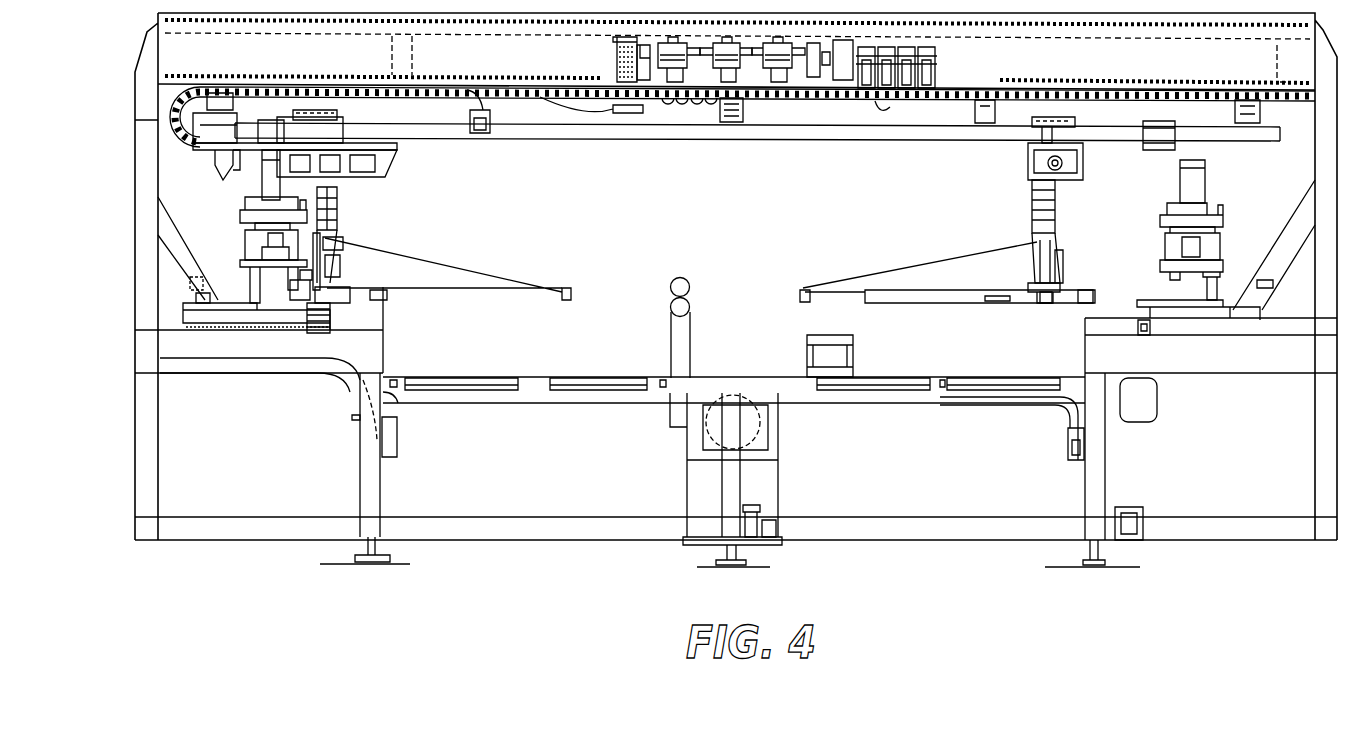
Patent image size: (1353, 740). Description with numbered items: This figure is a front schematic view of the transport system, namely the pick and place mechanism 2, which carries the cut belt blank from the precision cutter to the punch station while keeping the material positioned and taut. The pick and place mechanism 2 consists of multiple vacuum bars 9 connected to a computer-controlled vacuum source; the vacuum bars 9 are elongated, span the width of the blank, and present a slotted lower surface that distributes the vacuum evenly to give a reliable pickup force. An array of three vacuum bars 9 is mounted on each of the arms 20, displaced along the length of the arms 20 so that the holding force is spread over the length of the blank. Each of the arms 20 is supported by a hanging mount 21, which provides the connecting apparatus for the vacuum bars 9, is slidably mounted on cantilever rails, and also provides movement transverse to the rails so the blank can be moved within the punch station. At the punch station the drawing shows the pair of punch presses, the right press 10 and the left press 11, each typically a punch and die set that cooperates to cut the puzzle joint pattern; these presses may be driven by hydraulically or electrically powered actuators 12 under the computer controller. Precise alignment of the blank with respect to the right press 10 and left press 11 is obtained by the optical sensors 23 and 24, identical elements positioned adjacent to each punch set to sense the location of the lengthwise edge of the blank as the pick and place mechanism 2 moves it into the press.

The pick and place mechanism 2 is at (736, 219).
The vacuum bars 9 is at (573, 290).
The right press 10 is at (1235, 226).
The left press 11 is at (236, 233).
The actuators 12 is at (265, 182).
The arms 20 is at (476, 262).
The hanging mount 21 is at (394, 178).
The optical sensor 23 is at (1150, 335).
The optical sensor 24 is at (330, 333).